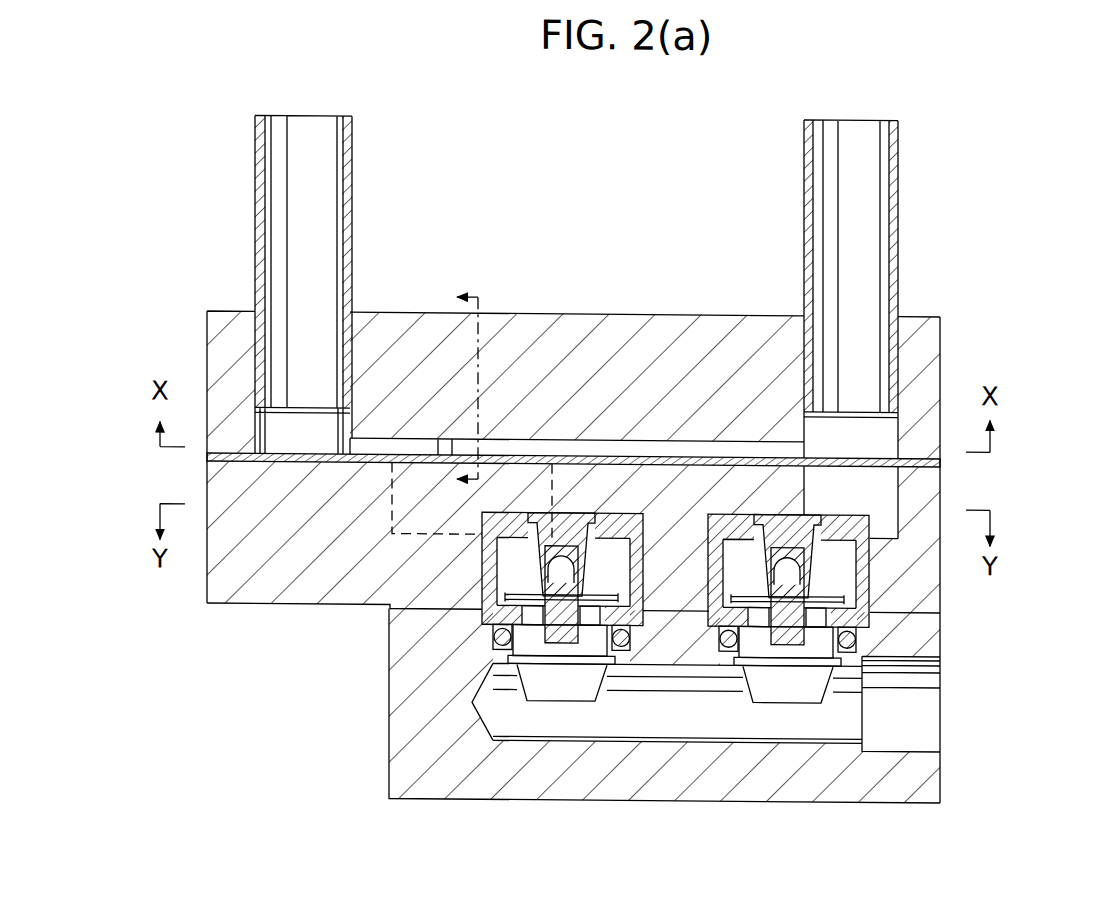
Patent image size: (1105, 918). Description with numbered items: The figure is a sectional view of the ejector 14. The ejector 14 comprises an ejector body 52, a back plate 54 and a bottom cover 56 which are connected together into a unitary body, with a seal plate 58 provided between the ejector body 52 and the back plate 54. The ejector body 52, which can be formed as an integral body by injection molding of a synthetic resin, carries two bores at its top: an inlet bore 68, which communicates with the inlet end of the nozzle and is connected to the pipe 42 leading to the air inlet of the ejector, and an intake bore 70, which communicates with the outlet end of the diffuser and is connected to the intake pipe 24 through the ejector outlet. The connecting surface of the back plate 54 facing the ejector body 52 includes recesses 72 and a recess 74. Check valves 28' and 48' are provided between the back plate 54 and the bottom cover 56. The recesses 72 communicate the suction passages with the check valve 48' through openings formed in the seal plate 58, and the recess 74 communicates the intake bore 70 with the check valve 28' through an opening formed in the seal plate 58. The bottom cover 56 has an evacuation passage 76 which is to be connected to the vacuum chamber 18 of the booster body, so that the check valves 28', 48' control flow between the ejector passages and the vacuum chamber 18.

The ejector 14 is at (491, 279).
The vacuum chamber 18 is at (910, 702).
The intake pipe 24 is at (850, 153).
The check valve 28' is at (884, 609).
The pipe 42 is at (302, 157).
The check valve 48' is at (590, 685).
The ejector body 52 is at (223, 327).
The back plate 54 is at (233, 577).
The bottom cover 56 is at (408, 694).
The seal plate 58 is at (207, 453).
The inlet bore 68 is at (325, 426).
The intake bore 70 is at (843, 419).
The recesses 72 is at (408, 501).
The recess 74 is at (873, 476).
The evacuation passage 76 is at (760, 727).